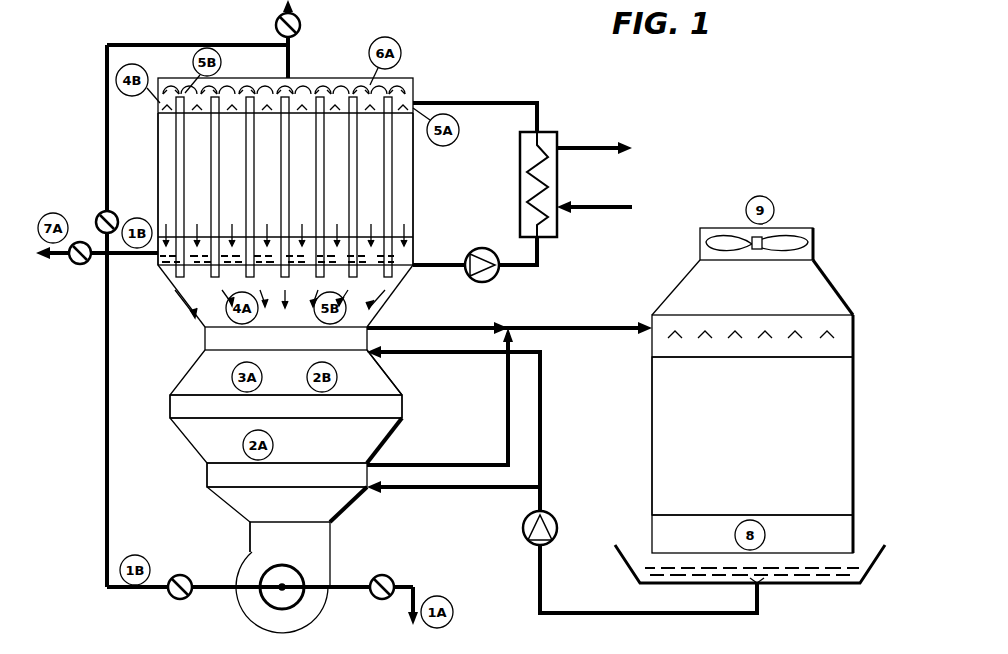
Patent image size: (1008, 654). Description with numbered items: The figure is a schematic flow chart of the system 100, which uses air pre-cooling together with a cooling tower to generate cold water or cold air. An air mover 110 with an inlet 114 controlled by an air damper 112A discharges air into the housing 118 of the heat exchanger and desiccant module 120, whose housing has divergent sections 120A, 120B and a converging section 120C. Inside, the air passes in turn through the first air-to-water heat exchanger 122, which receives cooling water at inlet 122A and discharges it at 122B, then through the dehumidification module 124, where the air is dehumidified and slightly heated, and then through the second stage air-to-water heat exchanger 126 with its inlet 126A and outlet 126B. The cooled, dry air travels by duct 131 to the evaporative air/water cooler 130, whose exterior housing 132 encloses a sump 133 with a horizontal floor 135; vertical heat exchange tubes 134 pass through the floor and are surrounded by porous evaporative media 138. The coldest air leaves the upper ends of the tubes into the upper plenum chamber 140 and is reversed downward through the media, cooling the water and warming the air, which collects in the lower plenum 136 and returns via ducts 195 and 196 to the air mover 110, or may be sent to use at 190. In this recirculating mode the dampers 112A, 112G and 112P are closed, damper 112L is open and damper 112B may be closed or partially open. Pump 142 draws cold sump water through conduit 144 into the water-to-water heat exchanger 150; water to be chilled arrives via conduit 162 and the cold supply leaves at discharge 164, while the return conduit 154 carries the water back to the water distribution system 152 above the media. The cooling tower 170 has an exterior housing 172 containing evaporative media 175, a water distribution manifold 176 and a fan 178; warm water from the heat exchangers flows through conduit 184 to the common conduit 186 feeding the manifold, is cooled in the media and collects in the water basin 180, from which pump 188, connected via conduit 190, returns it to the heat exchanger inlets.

The system 100 is at (720, 96).
The air mover 110 is at (236, 600).
The air damper 112A is at (376, 600).
The damper 112B is at (116, 214).
The damper 112G is at (82, 240).
The damper 112L is at (198, 563).
The damper 112P is at (300, 24).
The inlet 114 is at (336, 582).
The housing 118 is at (232, 505).
The heat exchanger and desiccant module 120 is at (148, 447).
The divergent section 120A is at (340, 508).
The divergent section 120B is at (395, 430).
The converging section 120C is at (388, 382).
The first air-to-water heat exchanger 122 is at (207, 474).
The inlet 122A is at (376, 495).
The discharge 122B is at (378, 458).
The dehumidification module 124 is at (170, 405).
The second stage air-to-water heat exchanger 126 is at (205, 340).
The inlet 126A is at (382, 360).
The outlet 126B is at (375, 322).
The evaporative air/water cooler 130 is at (425, 168).
The duct 131 is at (185, 310).
The exterior housing 132 is at (414, 205).
The sump 133 is at (413, 250).
The heat exchange tubes 134 is at (158, 162).
The horizontal floor 135 is at (272, 275).
The lower plenum 136 is at (152, 262).
The porous evaporative media 138 is at (176, 137).
The upper plenum chamber 140 is at (303, 92).
The pump 142 is at (496, 276).
The conduit 144 is at (460, 252).
The water-to-water heat exchanger 150 is at (543, 118).
The water distribution system 152 is at (363, 98).
The return conduit 154 is at (478, 100).
The conduit 162 is at (566, 198).
The heat exchanger discharge 164 is at (578, 143).
The cooling tower 170 is at (756, 297).
The exterior housing 172 is at (652, 455).
The evaporative media 175 is at (654, 382).
The water distribution manifold 176 is at (808, 326).
The fan 178 is at (700, 243).
The water basin 180 is at (612, 554).
The conduit 184 is at (506, 412).
The common conduit 186 is at (612, 300).
The pump 188 is at (522, 532).
The conduit 190 is at (70, 262).
The duct 195 is at (122, 258).
The duct 196 is at (107, 412).